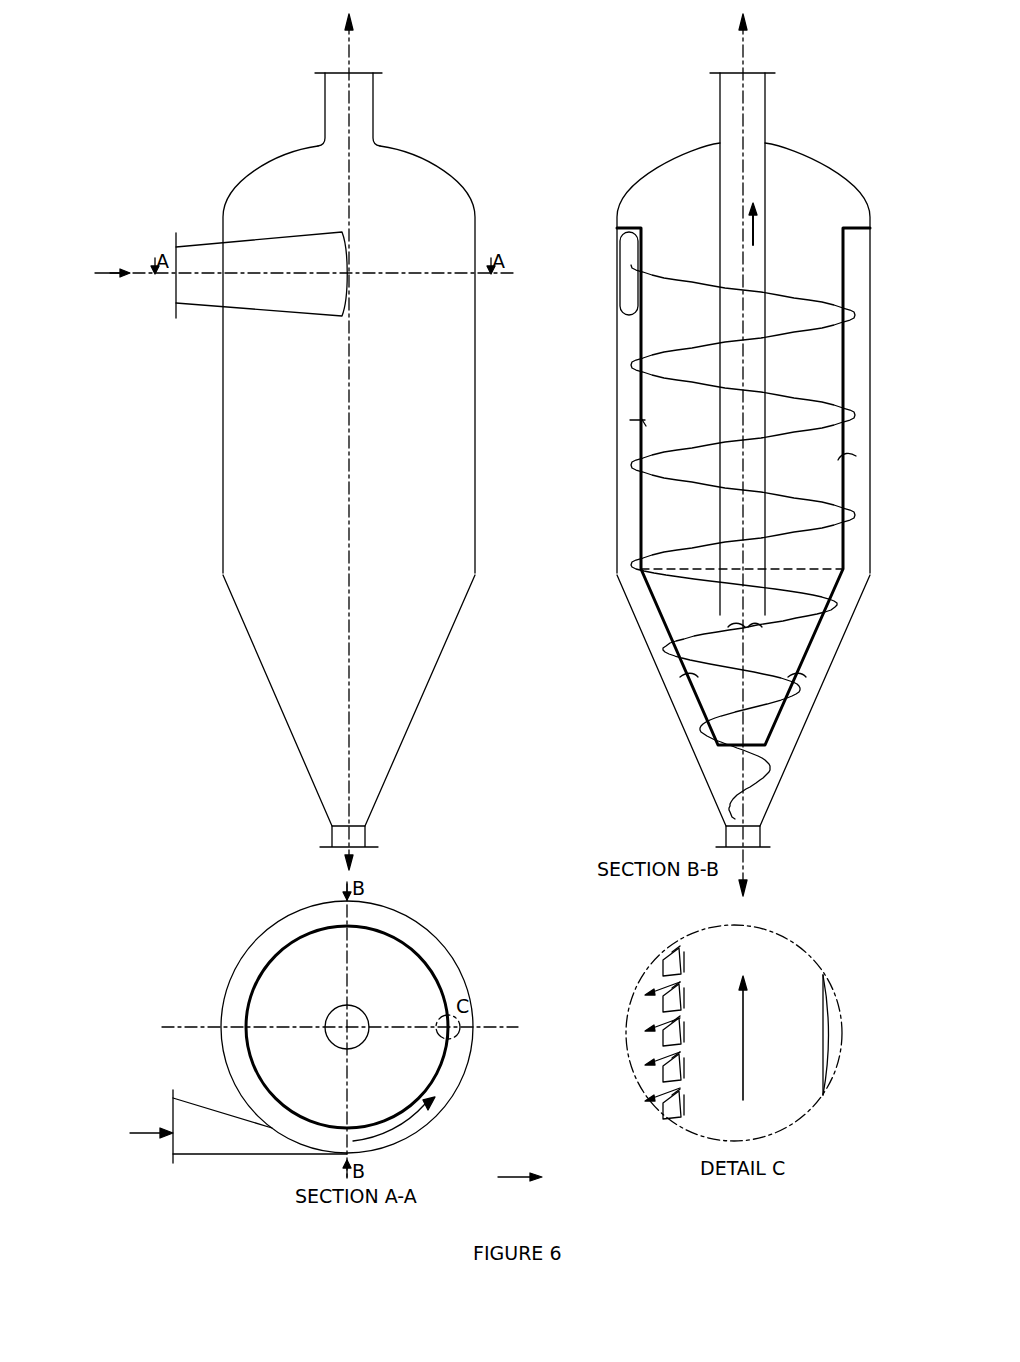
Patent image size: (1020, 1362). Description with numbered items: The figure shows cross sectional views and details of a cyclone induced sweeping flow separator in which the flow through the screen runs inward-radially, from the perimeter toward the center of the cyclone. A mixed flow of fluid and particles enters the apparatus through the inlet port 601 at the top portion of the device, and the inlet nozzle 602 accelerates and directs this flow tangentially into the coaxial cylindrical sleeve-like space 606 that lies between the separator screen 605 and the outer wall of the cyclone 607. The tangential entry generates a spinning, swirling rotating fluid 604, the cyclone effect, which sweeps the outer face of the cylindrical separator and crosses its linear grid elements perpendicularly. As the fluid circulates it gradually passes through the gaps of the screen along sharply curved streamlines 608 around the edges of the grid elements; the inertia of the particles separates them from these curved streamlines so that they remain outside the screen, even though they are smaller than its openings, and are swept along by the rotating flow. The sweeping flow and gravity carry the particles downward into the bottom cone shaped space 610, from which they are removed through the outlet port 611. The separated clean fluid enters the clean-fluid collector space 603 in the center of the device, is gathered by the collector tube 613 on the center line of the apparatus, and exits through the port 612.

The inlet port 601 is at (176, 300).
The inlet nozzle 602 is at (245, 1146).
The clean-fluid collector space 603 is at (780, 368).
The rotating fluid 604 is at (720, 342).
The separator screen 605 is at (644, 445).
The coaxial cylindrical sleeve-like space 606 is at (628, 545).
The outer wall of the cyclone 607 is at (223, 470).
The curved streamlines 608 is at (645, 420).
The cone shaped space 610 is at (280, 710).
The outlet port 611 is at (340, 848).
The port 612 is at (325, 73).
The collector tube 613 is at (766, 265).